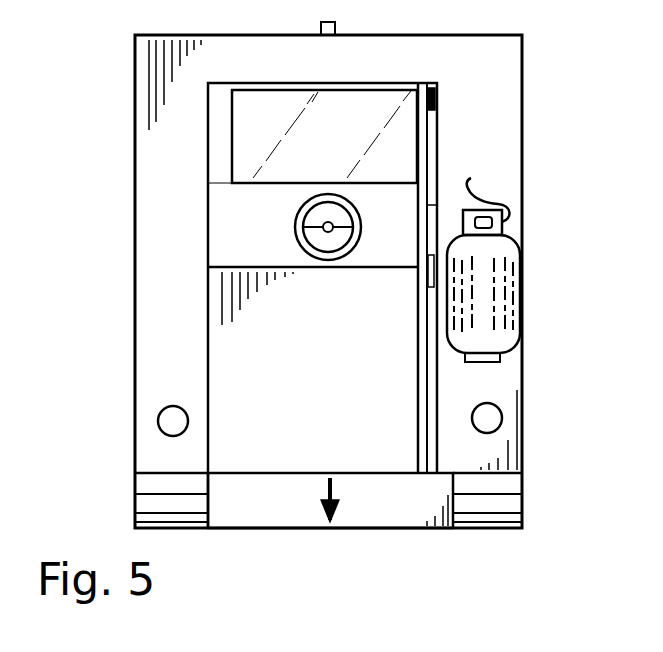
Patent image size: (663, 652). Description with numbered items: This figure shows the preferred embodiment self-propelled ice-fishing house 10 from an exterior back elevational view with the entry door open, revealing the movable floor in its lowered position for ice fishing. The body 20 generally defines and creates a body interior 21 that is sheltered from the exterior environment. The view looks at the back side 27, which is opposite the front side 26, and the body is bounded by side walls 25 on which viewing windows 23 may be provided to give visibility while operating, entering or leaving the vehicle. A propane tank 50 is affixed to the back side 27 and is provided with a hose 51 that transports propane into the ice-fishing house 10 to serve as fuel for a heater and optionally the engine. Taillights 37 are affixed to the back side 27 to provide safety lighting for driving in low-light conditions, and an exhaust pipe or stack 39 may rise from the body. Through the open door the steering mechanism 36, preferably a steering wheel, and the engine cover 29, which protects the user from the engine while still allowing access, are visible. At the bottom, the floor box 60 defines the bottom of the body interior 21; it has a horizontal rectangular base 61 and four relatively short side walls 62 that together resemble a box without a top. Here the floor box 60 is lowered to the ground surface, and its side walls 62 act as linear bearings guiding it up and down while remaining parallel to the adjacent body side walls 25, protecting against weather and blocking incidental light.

The self-propelled ice-fishing house 10 is at (540, 42).
The body 20 is at (524, 85).
The body interior 21 is at (230, 217).
The viewing window 23 is at (347, 176).
The side wall 25 is at (522, 132).
The front side 26 is at (380, 227).
The back side 27 is at (437, 76).
The engine cover 29 is at (377, 314).
The steering mechanism 36 is at (296, 233).
The taillight 37 is at (172, 421).
The exhaust pipe or stack 39 is at (336, 30).
The propane tank 50 is at (507, 332).
The hose 51 is at (483, 198).
The floor box 60 is at (289, 471).
The base 61 is at (281, 529).
The side wall 62 is at (372, 512).